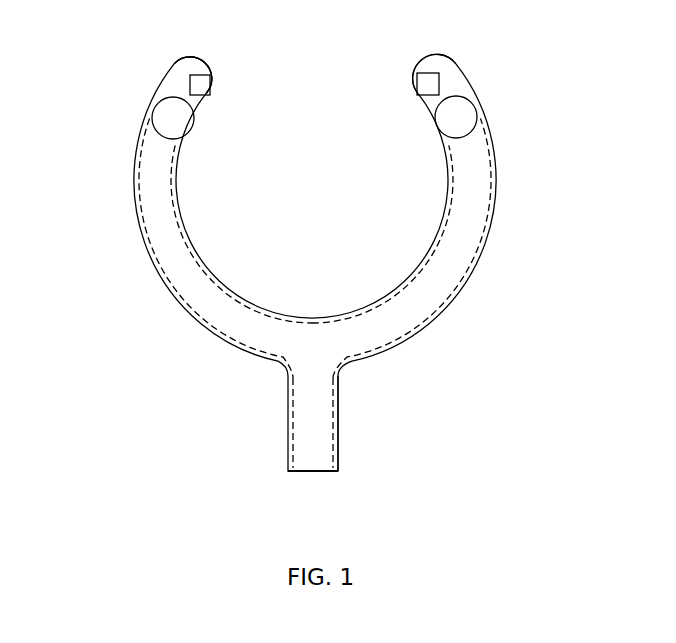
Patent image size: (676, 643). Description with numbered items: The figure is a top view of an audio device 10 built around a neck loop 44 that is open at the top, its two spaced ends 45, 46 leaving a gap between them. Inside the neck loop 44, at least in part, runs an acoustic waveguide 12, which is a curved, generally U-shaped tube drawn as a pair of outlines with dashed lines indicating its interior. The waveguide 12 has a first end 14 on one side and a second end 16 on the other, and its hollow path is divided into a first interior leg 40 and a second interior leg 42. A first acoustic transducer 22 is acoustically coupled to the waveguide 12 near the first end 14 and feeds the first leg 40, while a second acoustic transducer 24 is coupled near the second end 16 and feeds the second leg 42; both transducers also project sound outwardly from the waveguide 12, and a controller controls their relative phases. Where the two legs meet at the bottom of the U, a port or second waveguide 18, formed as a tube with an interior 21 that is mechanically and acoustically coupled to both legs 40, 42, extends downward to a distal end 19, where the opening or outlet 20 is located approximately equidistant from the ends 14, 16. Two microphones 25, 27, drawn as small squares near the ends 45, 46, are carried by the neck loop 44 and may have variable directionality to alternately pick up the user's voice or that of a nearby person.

The audio device 10 is at (108, 270).
The acoustic waveguide 12 is at (195, 245).
The first end 14 is at (152, 145).
The second end 16 is at (478, 140).
The port or second waveguide 18 is at (338, 405).
The distal end 19 is at (338, 467).
The opening or outlet 20 is at (318, 473).
The interior 21 is at (303, 403).
The first acoustic transducer 22 is at (187, 118).
The second acoustic transducer 24 is at (465, 117).
The microphone 25 is at (208, 90).
The microphone 27 is at (423, 87).
The first interior leg 40 is at (204, 273).
The second interior leg 42 is at (422, 278).
The neck loop 44 is at (165, 83).
The spaced end 45 is at (203, 70).
The spaced end 46 is at (432, 68).